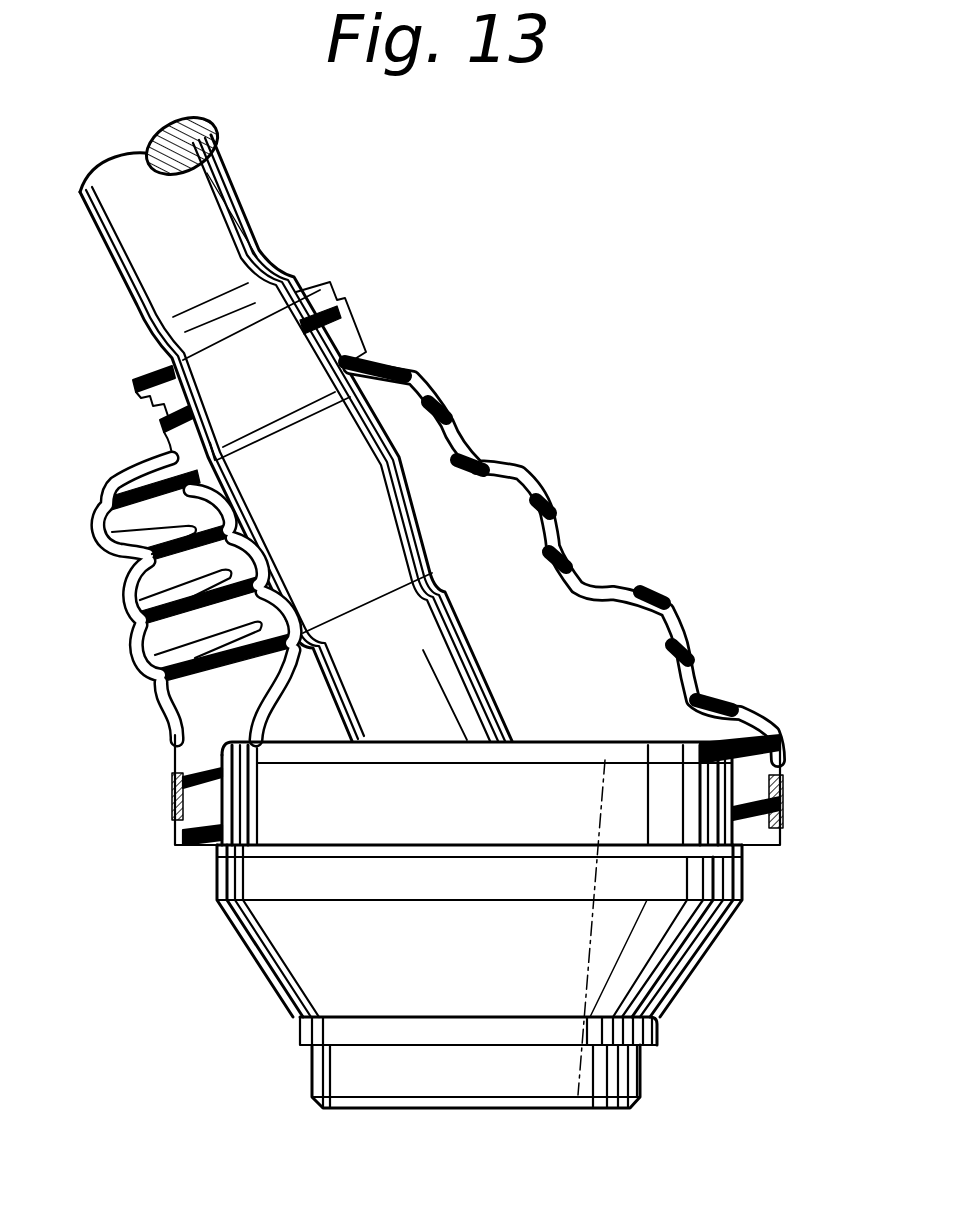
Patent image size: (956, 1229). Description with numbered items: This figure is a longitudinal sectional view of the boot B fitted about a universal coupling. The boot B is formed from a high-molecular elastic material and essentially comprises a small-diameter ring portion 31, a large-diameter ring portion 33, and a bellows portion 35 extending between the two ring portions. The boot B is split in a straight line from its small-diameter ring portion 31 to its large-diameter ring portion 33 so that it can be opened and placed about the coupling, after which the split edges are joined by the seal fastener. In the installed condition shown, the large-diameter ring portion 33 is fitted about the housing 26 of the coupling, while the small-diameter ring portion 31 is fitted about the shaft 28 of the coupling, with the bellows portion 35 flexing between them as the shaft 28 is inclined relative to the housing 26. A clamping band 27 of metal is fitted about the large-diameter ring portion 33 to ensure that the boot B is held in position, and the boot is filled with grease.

The shaft 28 is at (337, 487).
The boot B is at (540, 468).
The small-diameter ring portion 31 is at (170, 405).
The bellows portion 35 is at (97, 500).
The large-diameter ring portion 33 is at (200, 757).
The clamping band 27 is at (788, 800).
The housing 26 is at (335, 830).